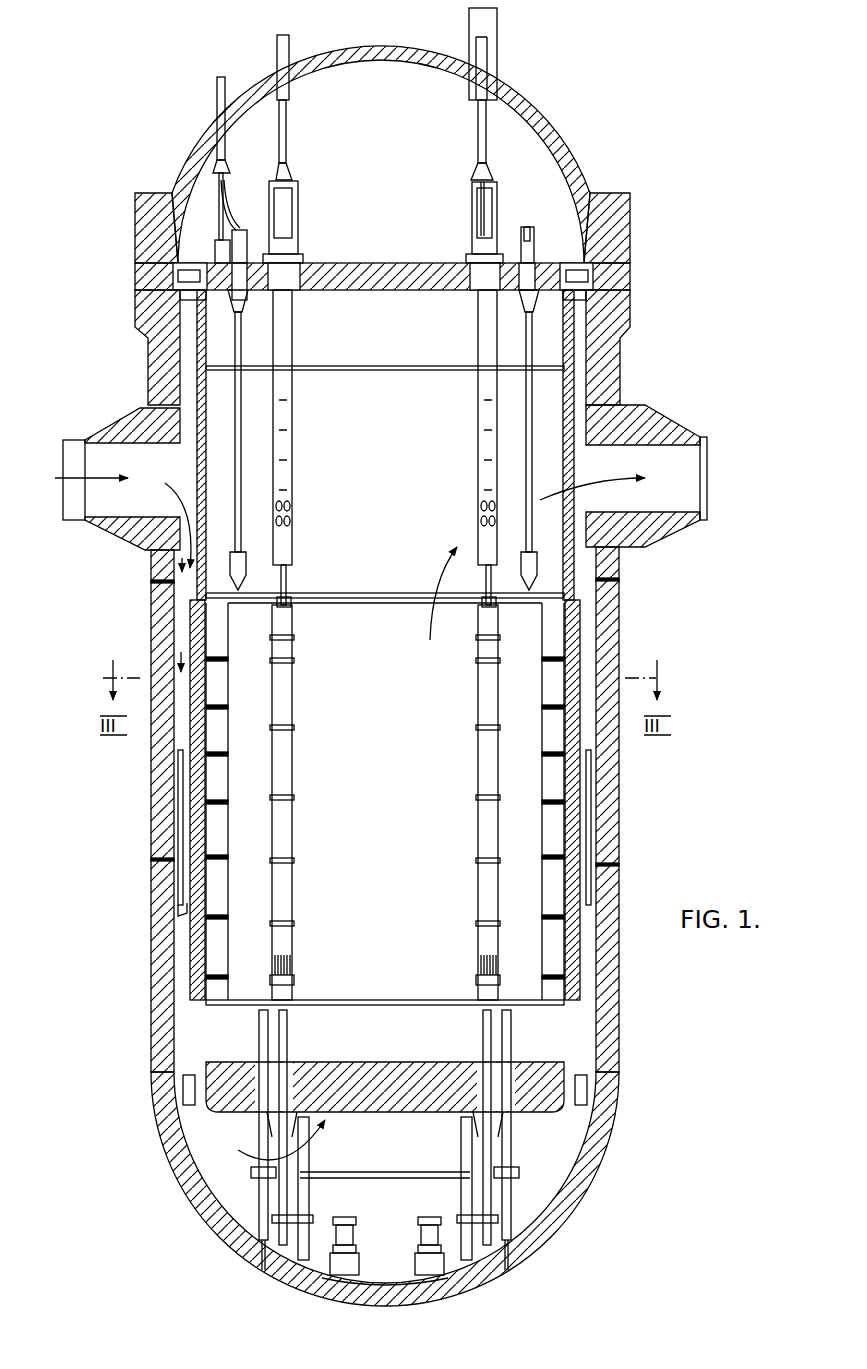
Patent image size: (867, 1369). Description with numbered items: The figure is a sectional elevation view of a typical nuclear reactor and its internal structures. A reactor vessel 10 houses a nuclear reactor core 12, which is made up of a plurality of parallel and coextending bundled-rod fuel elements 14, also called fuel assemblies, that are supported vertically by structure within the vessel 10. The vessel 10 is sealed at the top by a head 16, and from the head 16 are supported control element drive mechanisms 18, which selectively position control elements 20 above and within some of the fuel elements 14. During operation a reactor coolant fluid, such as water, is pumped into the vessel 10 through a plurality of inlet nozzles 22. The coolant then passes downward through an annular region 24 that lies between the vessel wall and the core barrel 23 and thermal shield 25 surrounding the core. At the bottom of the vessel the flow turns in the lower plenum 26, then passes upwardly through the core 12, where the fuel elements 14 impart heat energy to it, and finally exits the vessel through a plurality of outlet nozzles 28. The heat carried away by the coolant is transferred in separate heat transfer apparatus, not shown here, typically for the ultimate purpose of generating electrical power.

The reactor vessel 10 is at (615, 792).
The nuclear reactor core 12 is at (407, 816).
The fuel elements 14 is at (292, 704).
The head 16 is at (569, 148).
The control element drive mechanisms 18 is at (492, 31).
The control elements 20 is at (291, 604).
The inlet nozzles 22 is at (97, 422).
The core barrel 23 is at (207, 488).
The annular region 24 is at (182, 647).
The thermal shield 25 is at (195, 636).
The lower plenum 26 is at (412, 1149).
The outlet nozzles 28 is at (672, 417).